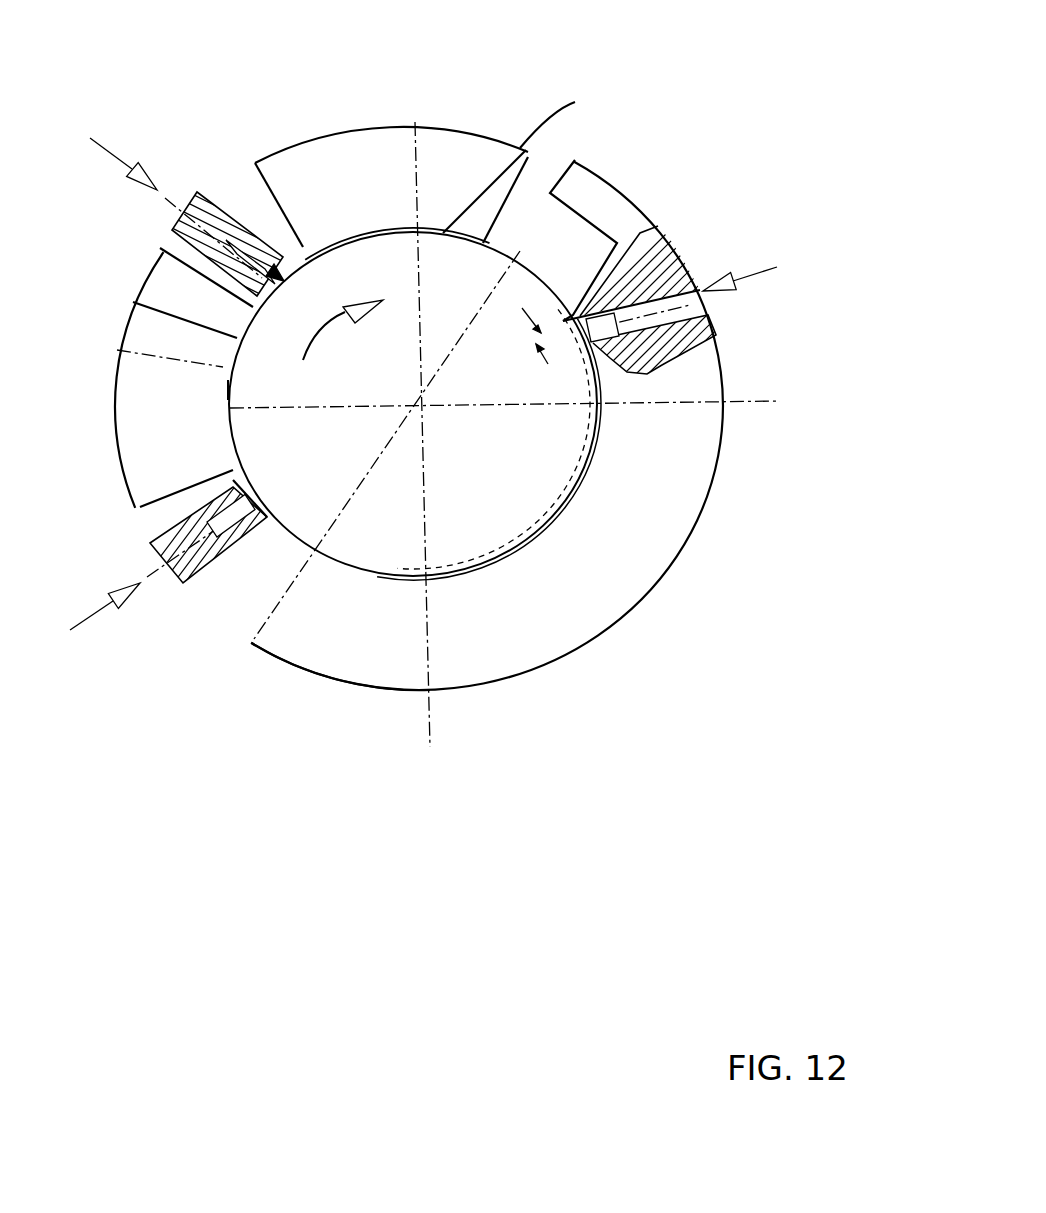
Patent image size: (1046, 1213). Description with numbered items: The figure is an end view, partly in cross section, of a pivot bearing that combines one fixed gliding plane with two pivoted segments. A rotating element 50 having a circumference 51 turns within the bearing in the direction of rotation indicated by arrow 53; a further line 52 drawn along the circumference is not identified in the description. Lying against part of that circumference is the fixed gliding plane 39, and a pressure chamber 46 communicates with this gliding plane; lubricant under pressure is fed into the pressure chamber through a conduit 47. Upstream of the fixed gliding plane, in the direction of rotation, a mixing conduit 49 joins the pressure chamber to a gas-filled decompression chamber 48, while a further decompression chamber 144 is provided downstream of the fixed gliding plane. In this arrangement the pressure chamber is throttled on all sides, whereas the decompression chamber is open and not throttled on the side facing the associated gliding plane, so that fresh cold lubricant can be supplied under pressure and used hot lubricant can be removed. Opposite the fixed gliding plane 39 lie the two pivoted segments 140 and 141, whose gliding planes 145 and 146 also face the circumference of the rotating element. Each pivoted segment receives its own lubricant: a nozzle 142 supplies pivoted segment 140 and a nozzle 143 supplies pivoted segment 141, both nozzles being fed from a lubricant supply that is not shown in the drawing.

The fixed gliding plane 39 is at (530, 543).
The pressure chamber 46 is at (617, 253).
The conduit 47 is at (655, 333).
The decompression chamber 48 is at (560, 233).
The mixing conduit 49 is at (517, 339).
The rotating element 50 is at (588, 473).
The circumference 51 is at (228, 392).
The rotor sleeve 52 is at (597, 443).
The direction of rotation 53 is at (357, 318).
The pivoted segment 140 is at (450, 147).
The pivoted segment 141 is at (143, 453).
The nozzle 142 is at (227, 216).
The nozzle 143 is at (237, 543).
The decompression chamber 144 is at (265, 583).
The gliding plane 145 is at (574, 116).
The gliding plane 146 is at (133, 303).